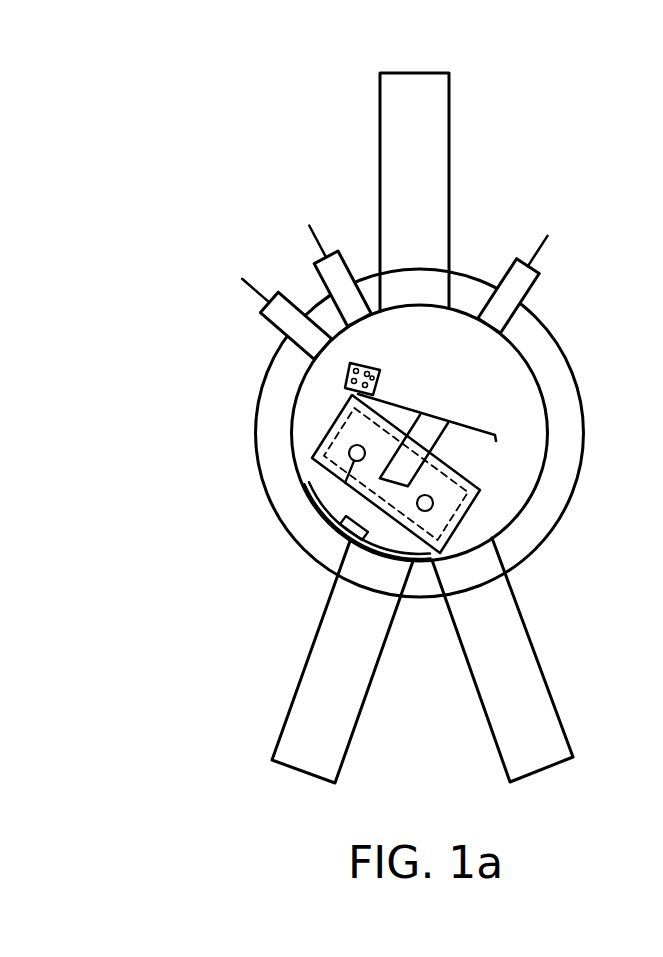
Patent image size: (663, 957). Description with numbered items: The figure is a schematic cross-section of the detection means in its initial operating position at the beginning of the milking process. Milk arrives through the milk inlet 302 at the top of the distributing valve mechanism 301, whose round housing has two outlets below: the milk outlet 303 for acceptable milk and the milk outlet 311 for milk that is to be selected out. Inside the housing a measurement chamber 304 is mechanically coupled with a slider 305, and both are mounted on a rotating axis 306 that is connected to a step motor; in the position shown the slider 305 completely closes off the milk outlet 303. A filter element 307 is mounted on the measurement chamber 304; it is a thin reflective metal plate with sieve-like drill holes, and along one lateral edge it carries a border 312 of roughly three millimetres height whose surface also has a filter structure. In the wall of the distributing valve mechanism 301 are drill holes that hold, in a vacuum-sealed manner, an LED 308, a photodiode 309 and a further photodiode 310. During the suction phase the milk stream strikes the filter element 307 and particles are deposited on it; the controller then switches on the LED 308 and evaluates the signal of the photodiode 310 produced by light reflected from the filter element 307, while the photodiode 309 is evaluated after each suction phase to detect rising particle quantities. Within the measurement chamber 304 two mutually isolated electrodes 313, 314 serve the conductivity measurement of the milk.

The distributing valve mechanism 301 is at (254, 415).
The milk inlet 302 is at (437, 145).
The milk outlet 303 is at (325, 647).
The measurement chamber 304 is at (352, 455).
The slider 305 is at (340, 560).
The rotating axis 306 is at (445, 443).
The filter element 307 is at (495, 435).
The LED 308 is at (317, 268).
The photodiode 309 is at (270, 315).
The further photodiode 310 is at (538, 280).
The milk outlet 311 is at (522, 638).
The border 312 is at (350, 373).
The electrode 313 is at (343, 508).
The electrode 314 is at (433, 503).